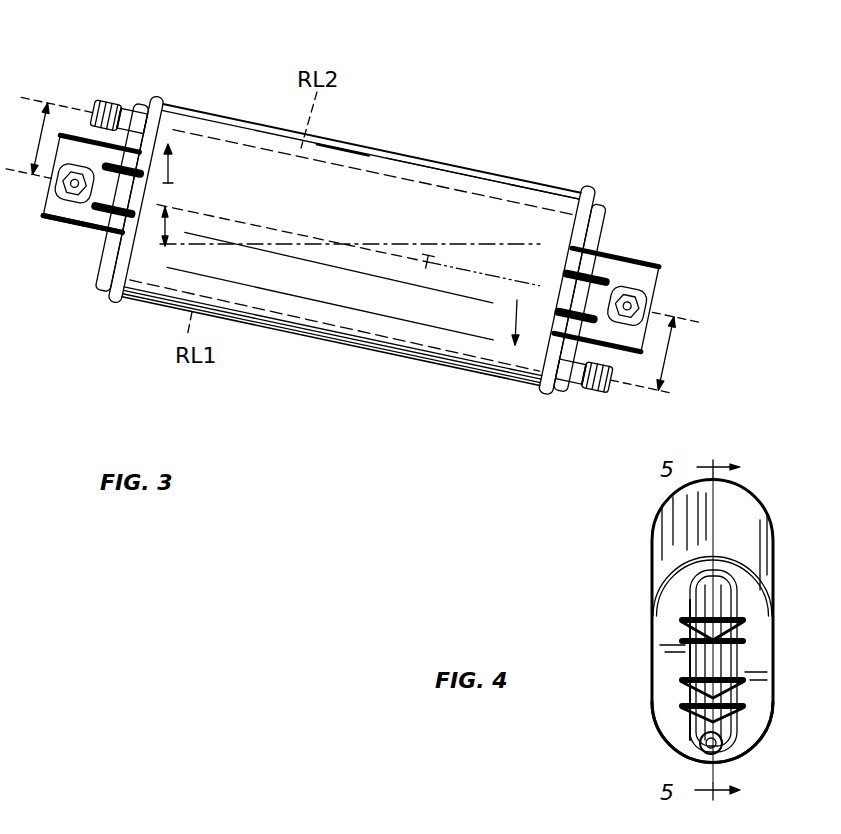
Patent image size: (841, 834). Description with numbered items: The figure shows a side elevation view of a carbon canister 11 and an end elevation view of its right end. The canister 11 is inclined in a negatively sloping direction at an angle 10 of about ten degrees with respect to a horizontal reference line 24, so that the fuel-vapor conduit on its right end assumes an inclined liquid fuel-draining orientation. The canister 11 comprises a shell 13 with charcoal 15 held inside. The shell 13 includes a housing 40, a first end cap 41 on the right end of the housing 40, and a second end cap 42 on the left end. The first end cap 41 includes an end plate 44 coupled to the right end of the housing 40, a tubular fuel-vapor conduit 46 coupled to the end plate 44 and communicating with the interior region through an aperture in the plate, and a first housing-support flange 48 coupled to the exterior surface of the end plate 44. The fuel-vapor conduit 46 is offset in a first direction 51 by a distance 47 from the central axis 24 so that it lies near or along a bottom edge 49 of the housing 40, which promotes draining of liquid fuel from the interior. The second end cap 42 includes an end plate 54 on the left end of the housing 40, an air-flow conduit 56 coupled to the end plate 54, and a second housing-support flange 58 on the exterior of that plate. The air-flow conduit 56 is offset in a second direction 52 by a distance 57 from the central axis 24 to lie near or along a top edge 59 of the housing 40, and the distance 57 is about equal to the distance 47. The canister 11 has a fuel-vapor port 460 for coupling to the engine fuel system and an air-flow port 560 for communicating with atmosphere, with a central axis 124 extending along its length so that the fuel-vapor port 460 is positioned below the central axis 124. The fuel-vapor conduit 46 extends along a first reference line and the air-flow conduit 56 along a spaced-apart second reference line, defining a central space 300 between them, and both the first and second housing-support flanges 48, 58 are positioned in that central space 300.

In FIG. 3, the angle 10 is at (168, 222).
In FIG. 3, the carbon canister 11 is at (351, 237).
In FIG. 4, the carbon canister 11 is at (630, 518).
In FIG. 3, the shell 13 is at (352, 141).
In FIG. 4, the shell 13 is at (742, 550).
In FIG. 3, the charcoal 15 is at (301, 296).
In FIG. 3, the horizontal reference line / central axis 24 is at (480, 244).
In FIG. 3, the housing 40 is at (493, 192).
In FIG. 4, the housing 40 is at (748, 514).
In FIG. 3, the first end cap 41 is at (616, 229).
In FIG. 4, the first end cap 41 is at (672, 681).
In FIG. 3, the second end cap 42 is at (68, 256).
In FIG. 3, the end plate 44 is at (593, 206).
In FIG. 4, the end plate 44 is at (667, 612).
In FIG. 3, the tubular fuel-vapor conduit 46 is at (590, 388).
In FIG. 4, the tubular fuel-vapor conduit 46 is at (693, 738).
In FIG. 3, the distance 47 is at (683, 360).
In FIG. 3, the first housing-support flange 48 is at (669, 263).
In FIG. 4, the first housing-support flange 48 is at (735, 660).
In FIG. 3, the bottom edge 49 is at (420, 365).
In FIG. 4, the bottom edge 49 is at (725, 763).
In FIG. 3, the first direction 51 is at (517, 322).
In FIG. 3, the second direction 52 is at (168, 172).
In FIG. 3, the end plate 54 is at (154, 98).
In FIG. 3, the air-flow conduit 56 is at (106, 108).
In FIG. 3, the distance 57 is at (55, 103).
In FIG. 3, the second housing-support flange 58 is at (87, 237).
In FIG. 3, the top edge 59 is at (218, 114).
In FIG. 3, the central axis 124 is at (427, 263).
In FIG. 3, the central space 300 is at (352, 215).
In FIG. 3, the fuel-vapor port 460 is at (567, 385).
In FIG. 3, the air-flow port 560 is at (131, 106).